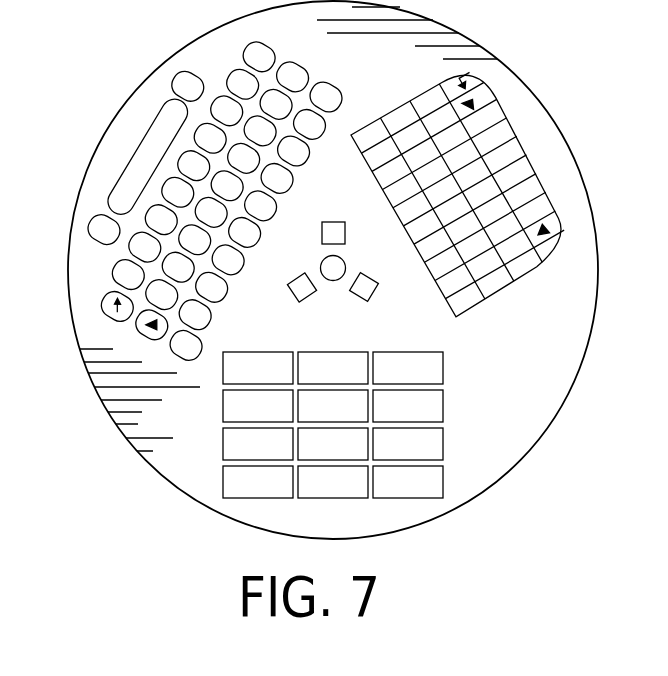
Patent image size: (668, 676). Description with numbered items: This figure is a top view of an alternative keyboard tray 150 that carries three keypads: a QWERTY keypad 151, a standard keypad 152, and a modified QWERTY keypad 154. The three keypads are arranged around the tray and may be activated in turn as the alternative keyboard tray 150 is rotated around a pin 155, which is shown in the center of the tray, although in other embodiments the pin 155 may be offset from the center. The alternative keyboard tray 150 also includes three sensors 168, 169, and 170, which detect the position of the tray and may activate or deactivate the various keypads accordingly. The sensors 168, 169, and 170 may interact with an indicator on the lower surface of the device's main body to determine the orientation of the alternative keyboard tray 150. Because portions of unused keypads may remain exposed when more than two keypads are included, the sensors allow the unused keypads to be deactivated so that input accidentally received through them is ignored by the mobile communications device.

The alternative keyboard tray 150 is at (553, 420).
The QWERTY keypad 151 is at (108, 160).
The standard keypad 152 is at (455, 452).
The modified QWERTY keypad 154 is at (548, 156).
The pin 155 is at (333, 281).
The sensor 168 is at (333, 221).
The sensor 169 is at (378, 292).
The sensor 170 is at (287, 290).